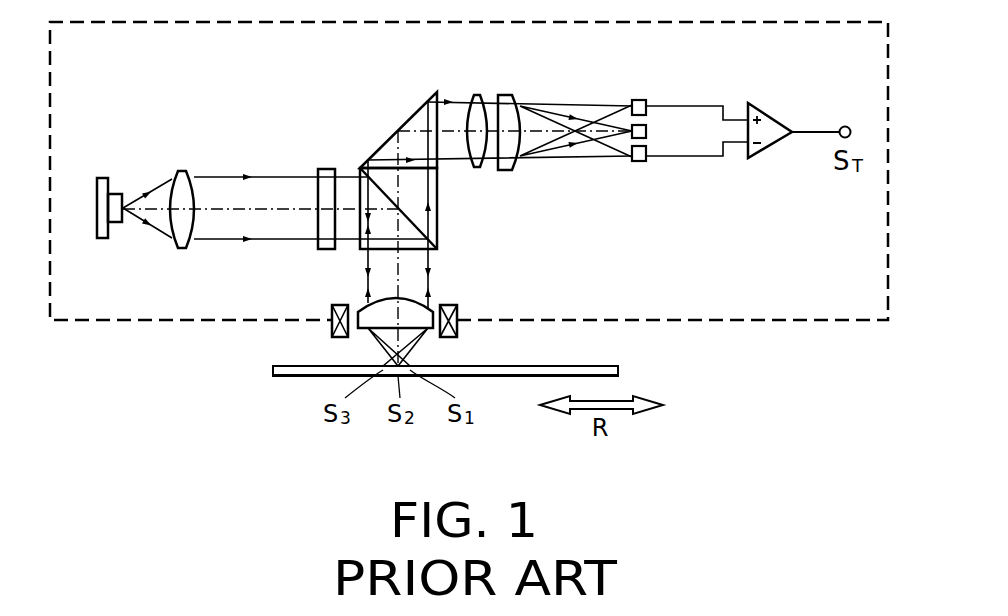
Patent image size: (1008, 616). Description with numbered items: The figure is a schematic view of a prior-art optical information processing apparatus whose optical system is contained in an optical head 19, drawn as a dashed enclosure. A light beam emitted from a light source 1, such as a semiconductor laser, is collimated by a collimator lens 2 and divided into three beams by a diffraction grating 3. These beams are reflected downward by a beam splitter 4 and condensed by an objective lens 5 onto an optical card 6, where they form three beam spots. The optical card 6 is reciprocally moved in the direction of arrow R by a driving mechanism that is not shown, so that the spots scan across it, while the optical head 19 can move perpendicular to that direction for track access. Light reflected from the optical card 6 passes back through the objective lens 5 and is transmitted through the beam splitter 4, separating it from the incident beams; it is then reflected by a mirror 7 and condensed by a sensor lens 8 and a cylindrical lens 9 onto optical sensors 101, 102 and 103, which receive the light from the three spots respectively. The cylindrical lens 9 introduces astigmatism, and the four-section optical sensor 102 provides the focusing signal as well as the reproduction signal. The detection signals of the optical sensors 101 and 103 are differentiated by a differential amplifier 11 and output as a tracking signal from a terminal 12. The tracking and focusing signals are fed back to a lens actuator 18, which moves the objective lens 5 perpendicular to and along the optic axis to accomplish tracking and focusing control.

The light source 1 is at (105, 178).
The collimator lens 2 is at (183, 170).
The diffraction grating 3 is at (325, 168).
The beam splitter 4 is at (440, 231).
The objective lens 5 is at (433, 310).
The optical card 6 is at (618, 370).
The mirror 7 is at (413, 108).
The sensor lens 8 is at (472, 94).
The cylindrical lens 9 is at (510, 94).
The optical sensor 101 is at (640, 100).
The optical sensor 102 is at (648, 131).
The optical sensor 103 is at (640, 162).
The differential amplifier 11 is at (775, 115).
The terminal 12 is at (845, 126).
The lens actuator 18 is at (458, 331).
The optical head 19 is at (807, 325).